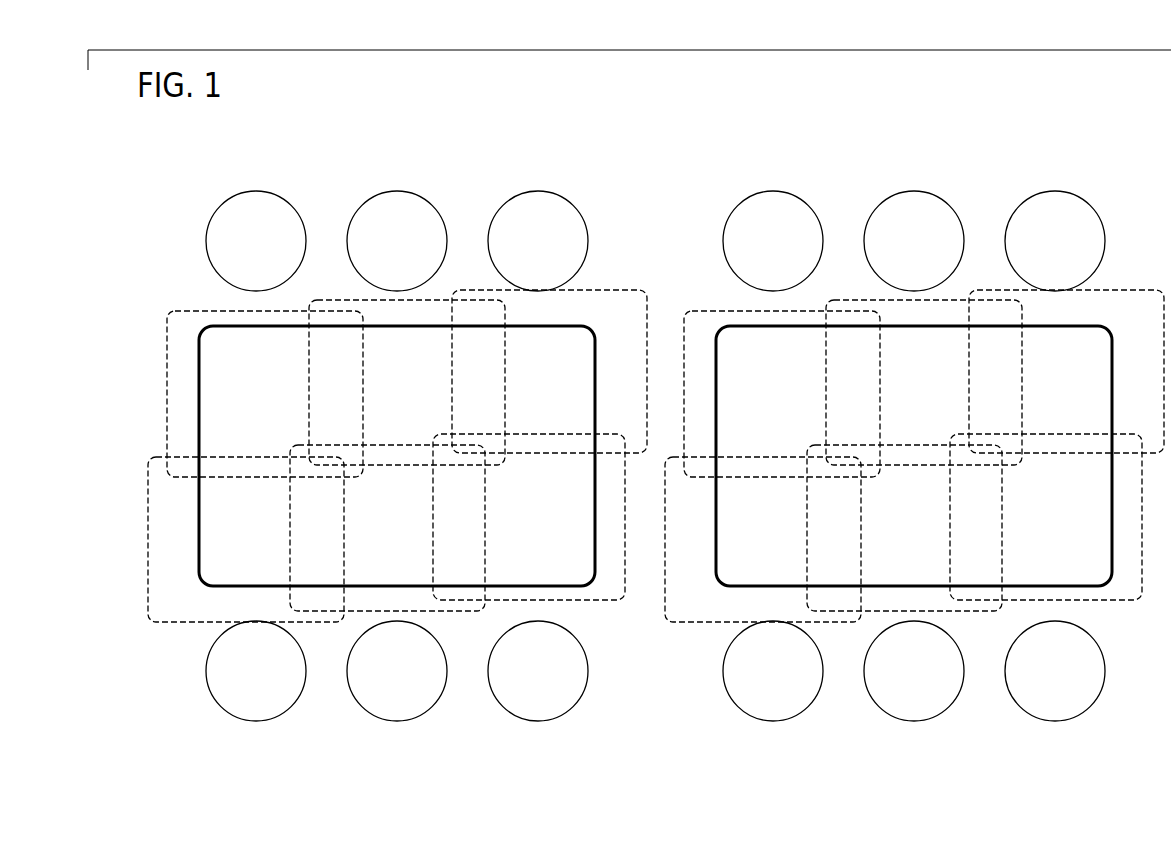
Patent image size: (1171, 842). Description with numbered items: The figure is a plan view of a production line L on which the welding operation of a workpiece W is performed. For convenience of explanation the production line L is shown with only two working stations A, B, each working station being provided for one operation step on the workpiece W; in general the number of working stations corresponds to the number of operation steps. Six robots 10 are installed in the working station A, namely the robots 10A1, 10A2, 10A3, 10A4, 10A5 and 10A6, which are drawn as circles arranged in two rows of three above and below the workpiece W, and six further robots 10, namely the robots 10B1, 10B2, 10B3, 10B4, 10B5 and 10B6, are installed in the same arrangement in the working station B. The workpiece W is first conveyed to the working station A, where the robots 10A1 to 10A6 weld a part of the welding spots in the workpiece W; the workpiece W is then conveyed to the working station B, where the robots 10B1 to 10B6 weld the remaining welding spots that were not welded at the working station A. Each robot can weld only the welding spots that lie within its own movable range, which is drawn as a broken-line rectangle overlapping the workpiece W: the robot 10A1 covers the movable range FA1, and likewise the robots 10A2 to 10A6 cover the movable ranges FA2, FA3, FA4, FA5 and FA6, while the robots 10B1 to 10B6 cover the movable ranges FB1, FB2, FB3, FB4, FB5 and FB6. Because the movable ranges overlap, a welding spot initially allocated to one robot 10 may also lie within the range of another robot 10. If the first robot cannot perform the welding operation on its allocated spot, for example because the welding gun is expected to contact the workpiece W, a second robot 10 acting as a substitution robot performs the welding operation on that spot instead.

The robot 10 is at (658, 460).
The robot 10A1 is at (267, 191).
The robot 10A2 is at (408, 191).
The robot 10A3 is at (549, 191).
The robot 10A4 is at (242, 722).
The robot 10A5 is at (383, 722).
The robot 10A6 is at (524, 722).
The robot 10B1 is at (784, 191).
The robot 10B2 is at (925, 191).
The robot 10B3 is at (1066, 191).
The robot 10B4 is at (759, 722).
The robot 10B5 is at (900, 722).
The robot 10B6 is at (1041, 722).
The movable range FA1 is at (190, 310).
The movable range FA2 is at (334, 299).
The movable range FA3 is at (621, 289).
The movable range FA4 is at (175, 625).
The movable range FA5 is at (462, 612).
The movable range FA6 is at (605, 601).
The movable range FB1 is at (707, 310).
The movable range FB2 is at (851, 299).
The movable range FB3 is at (1138, 289).
The movable range FB4 is at (692, 625).
The movable range FB5 is at (979, 612).
The movable range FB6 is at (1122, 601).
The workpiece W is at (597, 371).
The working station A is at (414, 122).
The working station B is at (931, 122).
The production line L is at (685, 136).